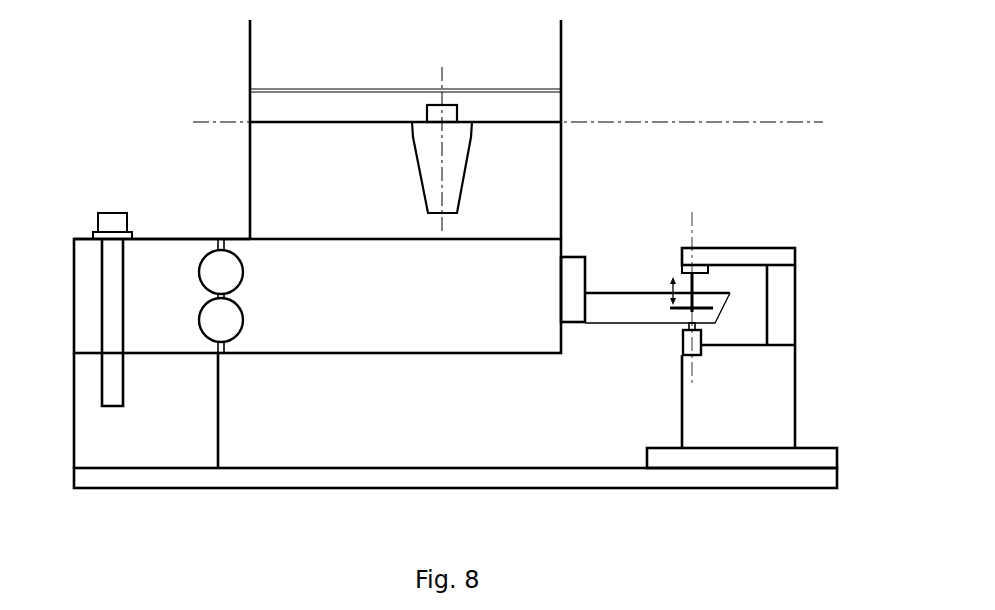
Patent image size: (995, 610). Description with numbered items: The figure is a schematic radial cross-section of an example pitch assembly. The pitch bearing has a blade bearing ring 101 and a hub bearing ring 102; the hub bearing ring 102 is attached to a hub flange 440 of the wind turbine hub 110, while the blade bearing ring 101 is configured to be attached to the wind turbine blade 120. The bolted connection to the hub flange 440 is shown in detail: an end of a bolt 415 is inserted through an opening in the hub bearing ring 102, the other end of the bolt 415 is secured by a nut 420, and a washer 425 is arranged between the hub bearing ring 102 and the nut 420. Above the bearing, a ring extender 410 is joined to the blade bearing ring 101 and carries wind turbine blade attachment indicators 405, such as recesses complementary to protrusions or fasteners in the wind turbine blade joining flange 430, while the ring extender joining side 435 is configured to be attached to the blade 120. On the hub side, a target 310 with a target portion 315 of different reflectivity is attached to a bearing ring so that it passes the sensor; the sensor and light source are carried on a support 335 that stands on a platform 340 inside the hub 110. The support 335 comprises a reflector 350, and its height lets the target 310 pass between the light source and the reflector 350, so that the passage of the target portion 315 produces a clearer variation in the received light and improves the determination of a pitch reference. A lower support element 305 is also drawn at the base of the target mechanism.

The blade bearing ring 101 is at (457, 332).
The hub bearing ring 102 is at (140, 247).
The hub 110 is at (193, 413).
The wind turbine blade 120 is at (547, 32).
The lower support 305 is at (683, 337).
The target 310 is at (572, 292).
The target portion 315 is at (678, 312).
The support 335 is at (778, 378).
The platform 340 is at (343, 477).
The reflector 350 is at (740, 248).
The wind turbine blade attachment indicators 405 is at (453, 170).
The ring extender 410 is at (545, 185).
The bolt 415 is at (112, 288).
The nut 420 is at (110, 220).
The washer 425 is at (98, 230).
The wind turbine blade joining flange 430 is at (545, 125).
The ring extender joining side 435 is at (268, 120).
The hub flange 440 is at (200, 352).